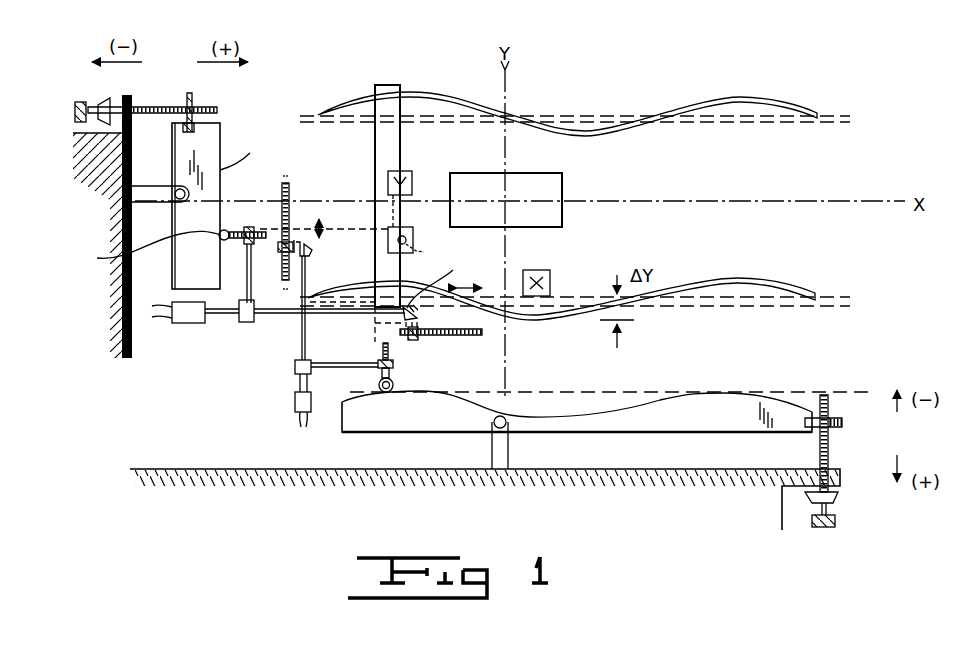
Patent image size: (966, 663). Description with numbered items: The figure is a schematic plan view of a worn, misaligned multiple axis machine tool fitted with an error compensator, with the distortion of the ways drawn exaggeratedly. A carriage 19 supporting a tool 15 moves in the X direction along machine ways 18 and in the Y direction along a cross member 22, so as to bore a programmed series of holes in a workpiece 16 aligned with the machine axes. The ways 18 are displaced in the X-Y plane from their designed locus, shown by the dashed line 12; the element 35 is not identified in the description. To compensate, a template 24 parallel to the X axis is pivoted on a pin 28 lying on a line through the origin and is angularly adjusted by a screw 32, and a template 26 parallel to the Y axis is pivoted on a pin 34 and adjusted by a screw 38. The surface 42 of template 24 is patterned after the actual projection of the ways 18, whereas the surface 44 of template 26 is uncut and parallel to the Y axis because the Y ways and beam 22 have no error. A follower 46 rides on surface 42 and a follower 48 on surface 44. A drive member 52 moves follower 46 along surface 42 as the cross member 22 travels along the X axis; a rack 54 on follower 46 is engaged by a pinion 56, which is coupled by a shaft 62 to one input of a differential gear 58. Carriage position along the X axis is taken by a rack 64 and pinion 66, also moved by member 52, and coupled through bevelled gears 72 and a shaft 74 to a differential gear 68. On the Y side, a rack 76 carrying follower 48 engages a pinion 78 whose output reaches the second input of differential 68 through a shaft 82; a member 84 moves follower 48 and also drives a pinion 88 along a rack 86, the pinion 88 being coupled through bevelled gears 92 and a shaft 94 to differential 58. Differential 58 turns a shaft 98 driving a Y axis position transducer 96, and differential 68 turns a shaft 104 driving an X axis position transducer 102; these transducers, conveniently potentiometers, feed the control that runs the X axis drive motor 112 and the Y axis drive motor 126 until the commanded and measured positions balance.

The dashed line 12 is at (842, 125).
The tool 15 is at (426, 252).
The workpiece 16 is at (562, 222).
The machine ways 18 is at (775, 98).
The carriage 19 is at (413, 240).
The cross member 22 is at (406, 133).
The template 24 is at (722, 434).
The template 26 is at (175, 158).
The pin 28 is at (495, 426).
The screw 32 is at (830, 452).
The pin 34 is at (130, 197).
The datum line 35 is at (770, 393).
The screw 38 is at (157, 110).
The template surface 42 is at (653, 400).
The template surface 44 is at (248, 152).
The follower 46 is at (387, 393).
The follower 48 is at (140, 251).
The drive member 52 is at (377, 327).
The rack 54 is at (382, 345).
The pinion 56 is at (393, 365).
The differential gear 58 is at (295, 365).
The shaft 62 is at (337, 373).
The rack 64 is at (477, 335).
The pinion 66 is at (415, 340).
The differential gear 68 is at (233, 323).
The bevelled gears 72 is at (445, 286).
The shaft 74 is at (282, 320).
The rack 76 is at (252, 244).
The pinion 78 is at (246, 226).
The shaft 82 is at (267, 277).
The member 84 is at (333, 226).
The rack 86 is at (287, 192).
The pinion 88 is at (292, 248).
The bevelled gears 92 is at (305, 248).
The shaft 94 is at (303, 280).
The Y axis position transducer 96 is at (297, 413).
The shaft 98 is at (297, 387).
The X axis position transducer 102 is at (170, 323).
The shaft 104 is at (217, 320).
The X axis drive motor 112 is at (550, 280).
The Y axis drive motor 126 is at (412, 183).